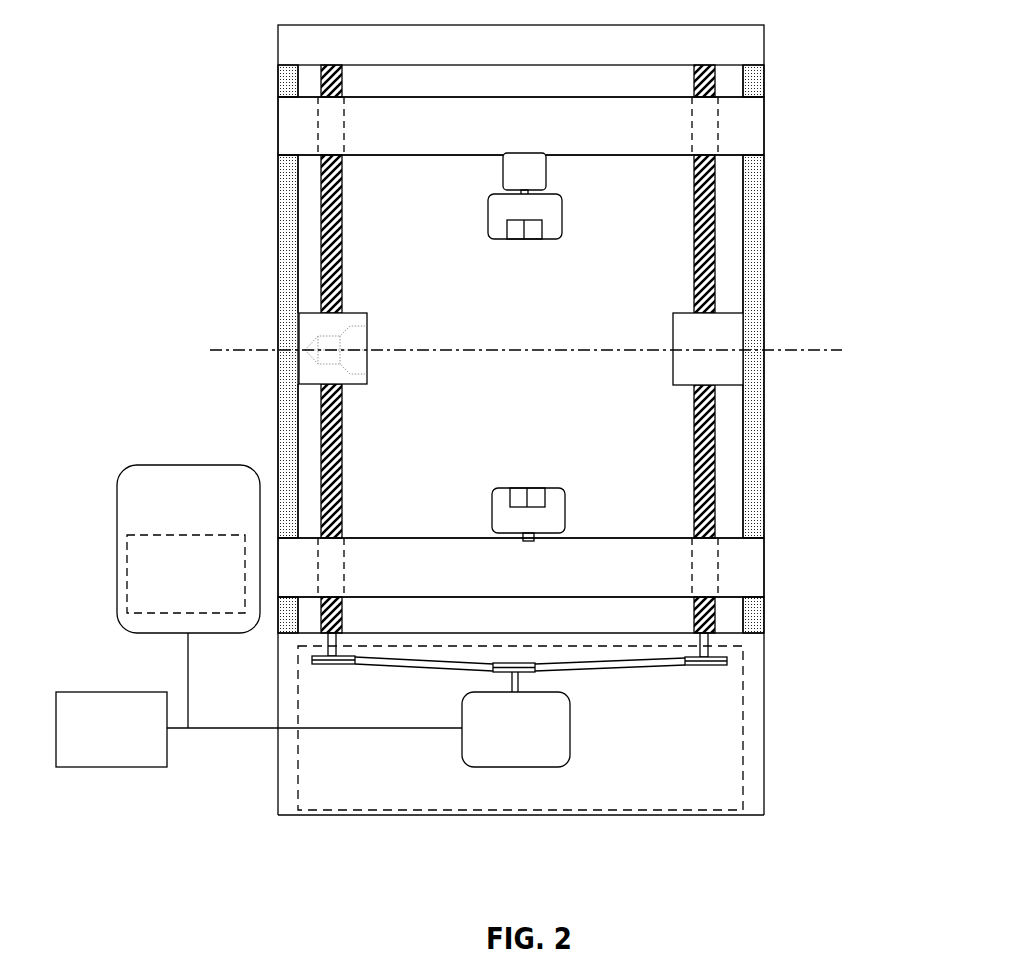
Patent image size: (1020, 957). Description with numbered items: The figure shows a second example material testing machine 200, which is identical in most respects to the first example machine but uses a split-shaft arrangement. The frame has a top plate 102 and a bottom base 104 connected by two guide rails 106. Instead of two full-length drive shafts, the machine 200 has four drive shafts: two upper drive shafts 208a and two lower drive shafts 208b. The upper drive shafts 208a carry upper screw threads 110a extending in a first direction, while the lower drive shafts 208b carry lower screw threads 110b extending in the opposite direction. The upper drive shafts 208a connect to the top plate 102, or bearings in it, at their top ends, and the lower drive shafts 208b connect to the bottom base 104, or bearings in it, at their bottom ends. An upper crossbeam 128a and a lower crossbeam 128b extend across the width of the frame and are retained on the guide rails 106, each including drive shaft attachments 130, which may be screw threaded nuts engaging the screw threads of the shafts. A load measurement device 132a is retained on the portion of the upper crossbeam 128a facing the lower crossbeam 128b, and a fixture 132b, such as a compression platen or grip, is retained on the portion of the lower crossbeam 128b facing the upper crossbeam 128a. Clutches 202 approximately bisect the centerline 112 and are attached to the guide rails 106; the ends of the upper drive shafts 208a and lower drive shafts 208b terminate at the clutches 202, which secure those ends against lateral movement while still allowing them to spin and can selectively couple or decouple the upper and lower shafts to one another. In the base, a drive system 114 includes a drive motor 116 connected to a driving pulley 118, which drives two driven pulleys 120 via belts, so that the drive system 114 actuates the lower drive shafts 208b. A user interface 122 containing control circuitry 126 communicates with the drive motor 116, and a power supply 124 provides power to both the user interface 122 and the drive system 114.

The material testing machine 200 is at (118, 106).
The top plate 102 is at (268, 41).
The bottom base 104 is at (797, 766).
The guide rails 106 is at (273, 232).
The upper screw threads 110a is at (343, 270).
The lower screw threads 110b is at (343, 426).
The centerline 112 is at (850, 352).
The drive system 114 is at (520, 728).
The drive motor 116 is at (516, 719).
The driving pulley 118 is at (550, 672).
The driven pulleys 120 is at (330, 668).
The user interface 122 is at (188, 596).
The power supply 124 is at (259, 729).
The control circuitry 126 is at (186, 574).
The upper crossbeam 128a is at (810, 95).
The lower crossbeam 128b is at (789, 572).
The drive shaft attachments 130 is at (350, 125).
The load measurement device 132a is at (500, 172).
The fixture 132b is at (533, 481).
The clutches 202 is at (296, 350).
The upper drive shafts 208a is at (318, 178).
The lower drive shafts 208b is at (321, 468).